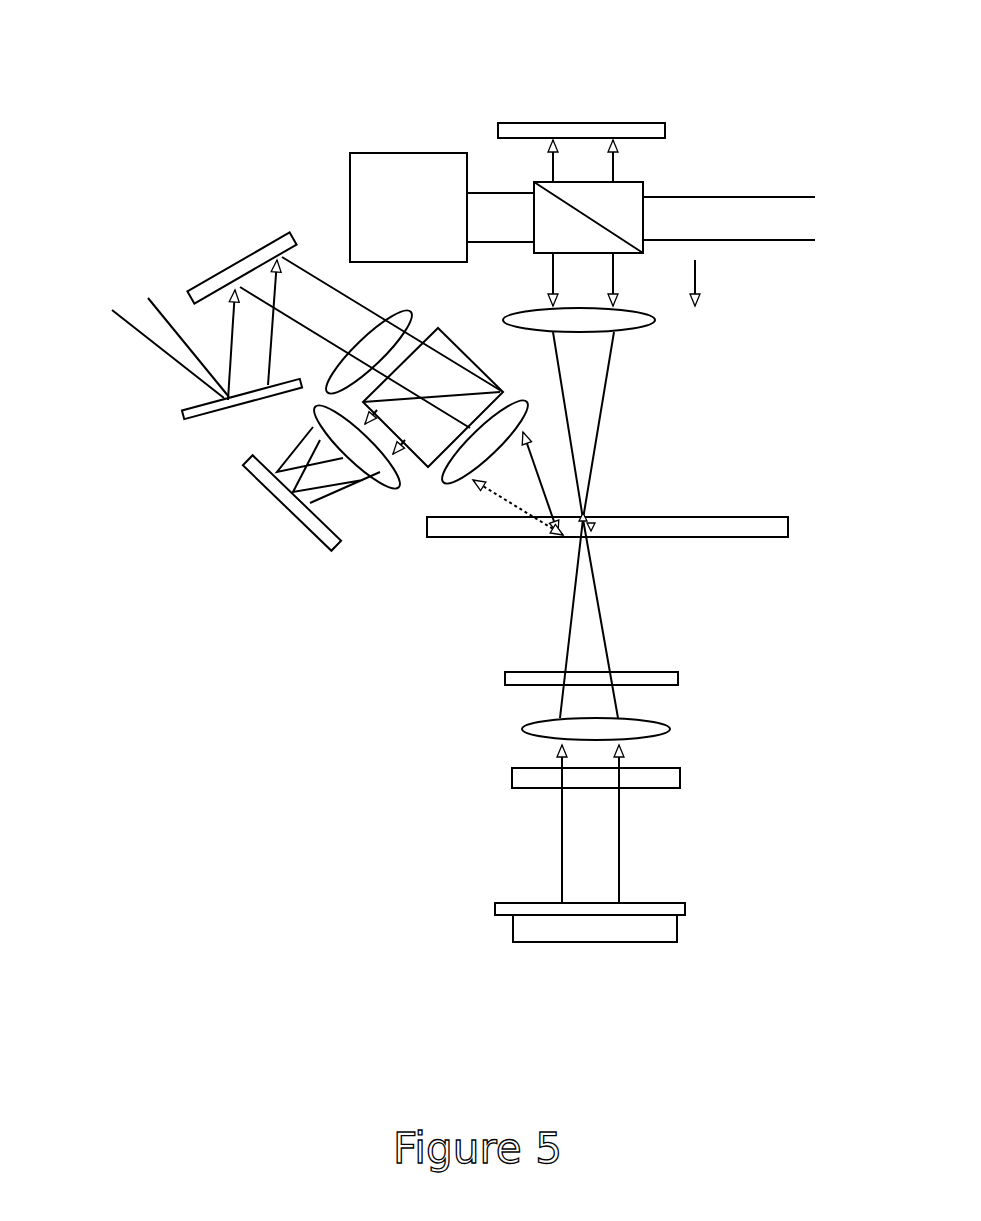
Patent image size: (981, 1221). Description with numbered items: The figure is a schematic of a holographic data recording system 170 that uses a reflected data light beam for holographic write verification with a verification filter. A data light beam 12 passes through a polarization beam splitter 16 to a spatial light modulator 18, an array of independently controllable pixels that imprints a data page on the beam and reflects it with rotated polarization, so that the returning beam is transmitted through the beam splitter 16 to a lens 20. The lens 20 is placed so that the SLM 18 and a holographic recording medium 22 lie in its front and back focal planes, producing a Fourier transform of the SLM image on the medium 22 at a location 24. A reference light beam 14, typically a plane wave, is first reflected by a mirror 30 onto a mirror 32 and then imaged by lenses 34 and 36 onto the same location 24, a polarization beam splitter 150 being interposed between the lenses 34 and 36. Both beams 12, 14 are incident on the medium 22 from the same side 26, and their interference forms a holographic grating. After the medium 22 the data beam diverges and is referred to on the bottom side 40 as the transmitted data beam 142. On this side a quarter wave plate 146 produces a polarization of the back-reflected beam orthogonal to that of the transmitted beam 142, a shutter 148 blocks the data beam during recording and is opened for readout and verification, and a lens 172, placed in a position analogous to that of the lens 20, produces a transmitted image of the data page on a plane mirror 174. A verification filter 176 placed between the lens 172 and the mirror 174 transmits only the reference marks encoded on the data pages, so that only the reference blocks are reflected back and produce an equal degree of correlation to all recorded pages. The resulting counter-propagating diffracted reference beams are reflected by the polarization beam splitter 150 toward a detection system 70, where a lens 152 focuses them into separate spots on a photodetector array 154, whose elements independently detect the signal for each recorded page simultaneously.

The holographic data recording system 170 is at (302, 102).
The reference light beam 14 is at (140, 332).
The mirror 30 is at (213, 413).
The mirror 32 is at (248, 250).
The lens 34 is at (372, 320).
The lens 36 is at (447, 484).
The polarization beam splitter 150 is at (413, 457).
The lens 152 is at (310, 412).
The photodetector array 154 is at (300, 507).
The detection system 70 is at (415, 153).
The polarization beam splitter 16 is at (630, 210).
The spatial light modulator 18 is at (600, 123).
The data light beam 12 is at (706, 197).
The lens 20 is at (613, 322).
The transmitted data beam 142 is at (573, 585).
The holographic recording medium 22 is at (685, 517).
The location 24 is at (585, 518).
The side 26 is at (657, 485).
The quarter wave plate 146 is at (668, 675).
The lens 172 is at (670, 725).
The shutter 148 is at (675, 777).
The verification filter 176 is at (673, 900).
The plane mirror 174 is at (668, 928).
The bottom side 40 is at (337, 753).